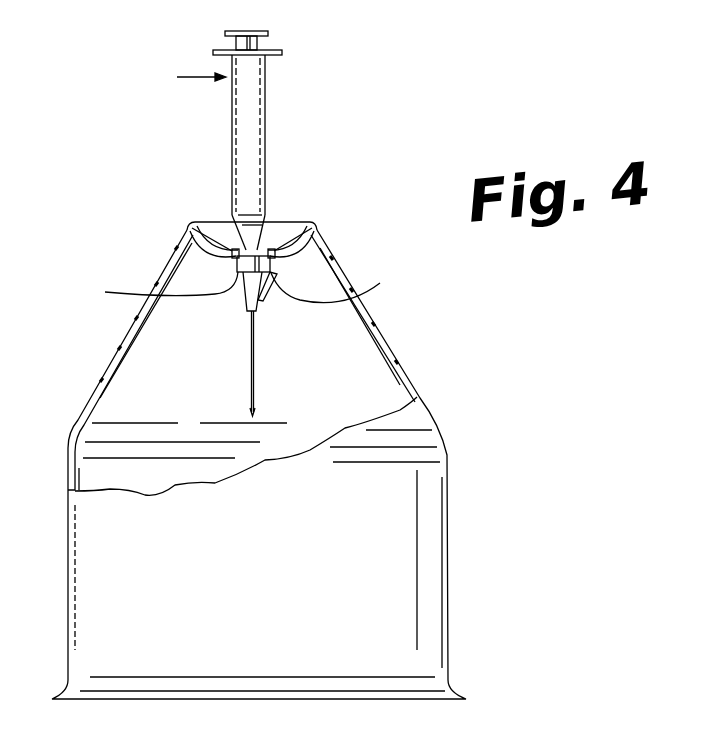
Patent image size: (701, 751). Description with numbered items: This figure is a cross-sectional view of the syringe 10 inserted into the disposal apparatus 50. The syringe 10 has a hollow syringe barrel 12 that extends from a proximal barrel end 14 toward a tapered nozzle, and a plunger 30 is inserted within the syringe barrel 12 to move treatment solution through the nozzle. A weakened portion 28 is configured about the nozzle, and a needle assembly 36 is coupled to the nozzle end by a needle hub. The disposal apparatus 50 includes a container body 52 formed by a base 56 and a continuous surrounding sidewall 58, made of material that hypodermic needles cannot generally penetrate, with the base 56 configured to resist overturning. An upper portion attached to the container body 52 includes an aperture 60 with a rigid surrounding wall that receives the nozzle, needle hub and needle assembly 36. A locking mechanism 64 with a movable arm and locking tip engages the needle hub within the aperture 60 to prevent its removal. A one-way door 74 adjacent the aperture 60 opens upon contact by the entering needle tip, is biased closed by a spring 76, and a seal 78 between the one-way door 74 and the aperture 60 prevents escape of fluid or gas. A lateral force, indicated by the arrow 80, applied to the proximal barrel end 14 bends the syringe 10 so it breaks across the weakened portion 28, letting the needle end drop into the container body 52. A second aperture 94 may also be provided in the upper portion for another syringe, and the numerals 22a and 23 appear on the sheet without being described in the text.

The syringe 10 is at (284, 127).
The syringe barrel 12 is at (266, 178).
The proximal barrel end 14 is at (266, 66).
The stray numeral 22a is at (418, 8).
The stray numeral 23 is at (412, 32).
The weakened portion 28 is at (226, 220).
The plunger 30 is at (264, 31).
The needle assembly 36 is at (233, 345).
The disposal apparatus 50 is at (303, 419).
The container body 52 is at (372, 583).
The base 56 is at (458, 692).
The sidewall 58 is at (449, 522).
The aperture 60 is at (282, 208).
The locking mechanism 64 is at (233, 253).
The one-way door 74 is at (346, 283).
The spring 76 is at (276, 254).
The seal 78 is at (156, 282).
The arrow 80 is at (191, 77).
The second aperture 94 is at (210, 222).